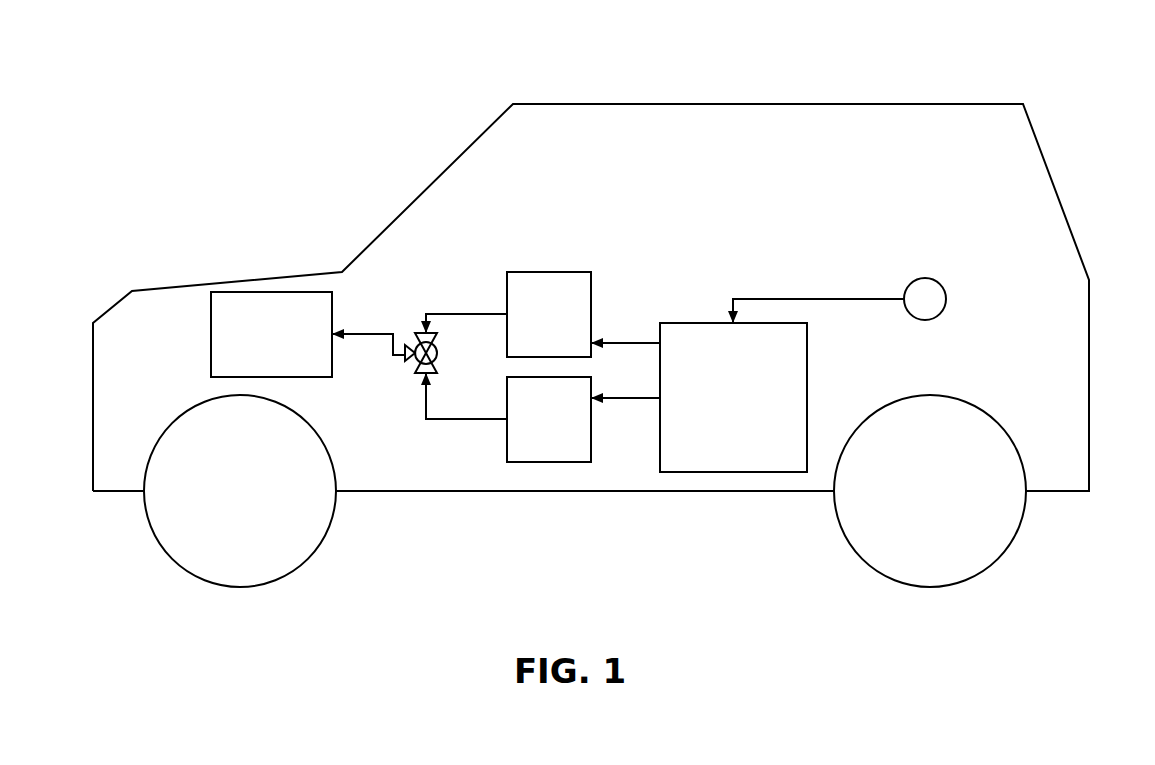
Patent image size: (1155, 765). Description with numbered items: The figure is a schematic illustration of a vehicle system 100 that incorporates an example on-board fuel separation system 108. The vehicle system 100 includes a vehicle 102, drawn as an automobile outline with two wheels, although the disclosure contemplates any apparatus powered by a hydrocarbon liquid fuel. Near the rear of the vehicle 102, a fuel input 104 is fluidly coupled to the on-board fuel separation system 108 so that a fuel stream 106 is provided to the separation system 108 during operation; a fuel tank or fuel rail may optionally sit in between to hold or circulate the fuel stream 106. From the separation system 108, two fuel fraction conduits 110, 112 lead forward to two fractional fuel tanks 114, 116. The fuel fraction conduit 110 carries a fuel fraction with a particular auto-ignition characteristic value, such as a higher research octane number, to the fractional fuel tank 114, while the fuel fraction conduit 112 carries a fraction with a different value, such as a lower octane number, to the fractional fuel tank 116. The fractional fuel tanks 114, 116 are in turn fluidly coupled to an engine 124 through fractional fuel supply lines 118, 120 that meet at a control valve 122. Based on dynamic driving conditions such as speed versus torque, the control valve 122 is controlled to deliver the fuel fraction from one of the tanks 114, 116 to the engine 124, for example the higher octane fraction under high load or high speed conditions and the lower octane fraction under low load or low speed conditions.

The vehicle system 100 is at (326, 72).
The vehicle 102 is at (908, 102).
The fuel input 104 is at (947, 298).
The fuel stream 106 is at (833, 298).
The on-board fuel separation system 108 is at (808, 387).
The fuel fraction conduit 110 is at (623, 338).
The fuel fraction conduit 112 is at (617, 402).
The fractional fuel tank 114 is at (548, 272).
The fractional fuel tank 116 is at (548, 462).
The fractional fuel supply line 118 is at (468, 312).
The fractional fuel supply line 120 is at (454, 420).
The control valve 122 is at (412, 365).
The engine 124 is at (325, 378).